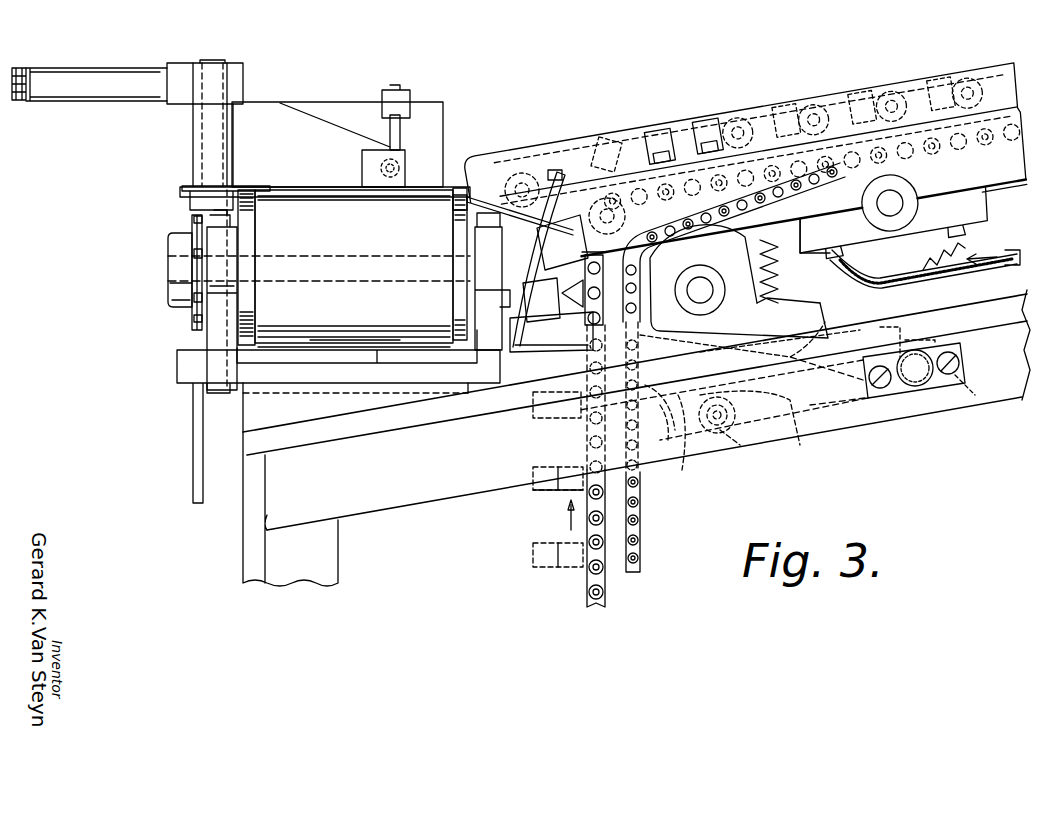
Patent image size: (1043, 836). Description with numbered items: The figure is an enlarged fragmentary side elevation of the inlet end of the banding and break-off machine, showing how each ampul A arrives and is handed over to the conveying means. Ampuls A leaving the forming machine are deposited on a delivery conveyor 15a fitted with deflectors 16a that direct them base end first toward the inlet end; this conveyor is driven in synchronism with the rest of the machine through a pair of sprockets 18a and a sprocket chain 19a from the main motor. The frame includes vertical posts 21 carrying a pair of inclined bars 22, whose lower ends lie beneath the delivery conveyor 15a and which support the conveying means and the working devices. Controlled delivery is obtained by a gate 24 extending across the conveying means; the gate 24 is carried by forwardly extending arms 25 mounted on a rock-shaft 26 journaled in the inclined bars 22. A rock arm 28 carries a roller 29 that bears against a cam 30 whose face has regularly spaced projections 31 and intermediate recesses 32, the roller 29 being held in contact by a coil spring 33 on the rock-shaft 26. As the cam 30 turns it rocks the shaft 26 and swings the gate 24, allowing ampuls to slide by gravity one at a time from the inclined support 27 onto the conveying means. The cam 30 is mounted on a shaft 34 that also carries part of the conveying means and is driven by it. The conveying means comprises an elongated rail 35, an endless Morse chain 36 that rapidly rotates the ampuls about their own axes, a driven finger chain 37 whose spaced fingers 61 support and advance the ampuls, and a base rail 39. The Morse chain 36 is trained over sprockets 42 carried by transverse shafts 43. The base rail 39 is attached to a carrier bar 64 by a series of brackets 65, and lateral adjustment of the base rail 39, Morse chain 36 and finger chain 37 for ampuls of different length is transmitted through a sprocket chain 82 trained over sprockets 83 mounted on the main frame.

The delivery conveyor 15a is at (370, 228).
The deflectors 16a is at (398, 163).
The sprockets 18a is at (192, 218).
The sprocket chain 19a is at (192, 318).
The vertical posts 21 is at (303, 570).
The inclined bars 22 is at (394, 494).
The gate 24 is at (560, 172).
The forwardly extending arms 25 is at (524, 338).
The rock-shaft 26 is at (915, 388).
The inclined support 27 is at (480, 198).
The rock arm 28 is at (870, 400).
The roller 29 is at (720, 433).
The cam 30 is at (807, 282).
The projections 31 is at (680, 470).
The recesses 32 is at (658, 418).
The coil spring 33 is at (965, 383).
The shaft 34 is at (702, 292).
The elongated rail 35 is at (566, 258).
The endless chain 36 is at (1012, 252).
The finger chain 37 is at (590, 584).
The base rail 39 is at (747, 165).
The sprockets 42 is at (912, 259).
The transverse shafts 43 is at (906, 200).
The fingers 61 is at (928, 90).
The carrier bar 64 is at (806, 233).
The brackets 65 is at (679, 114).
The sprocket chain 82 is at (640, 528).
The sprockets 83 is at (779, 266).
The ampul A is at (890, 90).